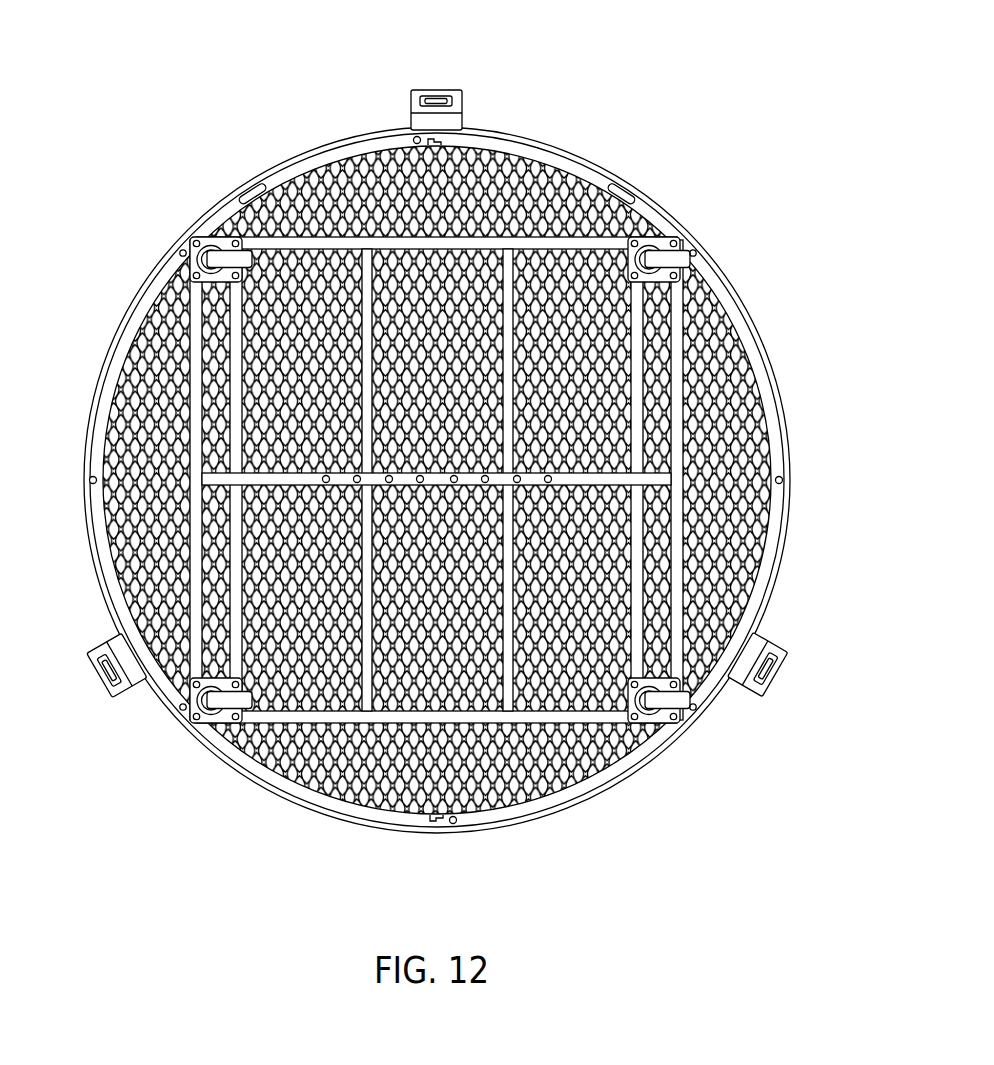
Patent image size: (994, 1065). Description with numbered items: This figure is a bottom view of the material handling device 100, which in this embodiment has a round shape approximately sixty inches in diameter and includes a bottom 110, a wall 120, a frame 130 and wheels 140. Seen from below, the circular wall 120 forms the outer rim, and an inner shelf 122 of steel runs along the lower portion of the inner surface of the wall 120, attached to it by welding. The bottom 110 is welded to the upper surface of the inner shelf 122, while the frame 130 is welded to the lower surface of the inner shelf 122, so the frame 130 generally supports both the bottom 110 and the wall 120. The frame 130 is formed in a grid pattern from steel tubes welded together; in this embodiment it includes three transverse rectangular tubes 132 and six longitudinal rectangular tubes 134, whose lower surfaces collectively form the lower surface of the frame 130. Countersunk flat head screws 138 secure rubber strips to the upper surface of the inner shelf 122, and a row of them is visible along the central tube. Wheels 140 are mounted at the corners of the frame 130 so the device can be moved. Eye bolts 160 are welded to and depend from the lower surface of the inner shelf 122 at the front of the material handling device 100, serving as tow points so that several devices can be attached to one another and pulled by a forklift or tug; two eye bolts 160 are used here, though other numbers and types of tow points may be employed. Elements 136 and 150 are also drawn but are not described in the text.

The material handling device 100 is at (688, 72).
The bottom 110 is at (455, 182).
The wall 120 is at (335, 128).
The inner shelf 122 is at (540, 803).
The frame 130 is at (518, 218).
The transverse rectangular tubes 132 is at (404, 243).
The longitudinal rectangular tubes 134 is at (238, 377).
The rim fasteners 136 is at (451, 825).
The countersunk flat head screws 138 is at (432, 490).
The wheels 140 is at (217, 240).
The mounting clips 150 is at (468, 83).
The eye bolts 160 is at (249, 189).